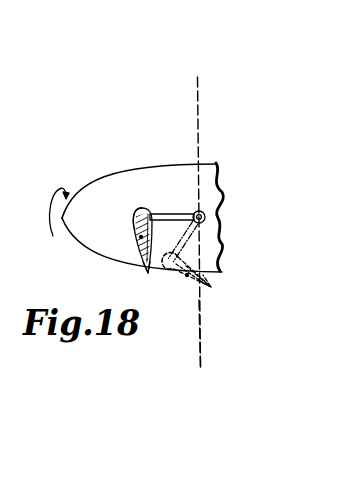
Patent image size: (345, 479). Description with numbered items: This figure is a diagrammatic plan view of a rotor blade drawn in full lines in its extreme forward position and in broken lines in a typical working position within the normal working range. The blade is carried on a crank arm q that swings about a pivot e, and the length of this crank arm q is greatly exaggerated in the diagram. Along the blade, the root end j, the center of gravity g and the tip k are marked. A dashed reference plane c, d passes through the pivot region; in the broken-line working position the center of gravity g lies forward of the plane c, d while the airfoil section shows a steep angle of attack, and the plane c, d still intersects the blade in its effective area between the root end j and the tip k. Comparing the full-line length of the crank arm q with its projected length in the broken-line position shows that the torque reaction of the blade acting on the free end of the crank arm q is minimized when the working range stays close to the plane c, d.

The plane c, d reference point c is at (196, 214).
The plane c, d reference point d is at (201, 342).
The pivot e is at (204, 214).
The center of gravity g is at (141, 237).
The root end j is at (141, 209).
The tip k is at (148, 274).
The crank arm q is at (171, 214).